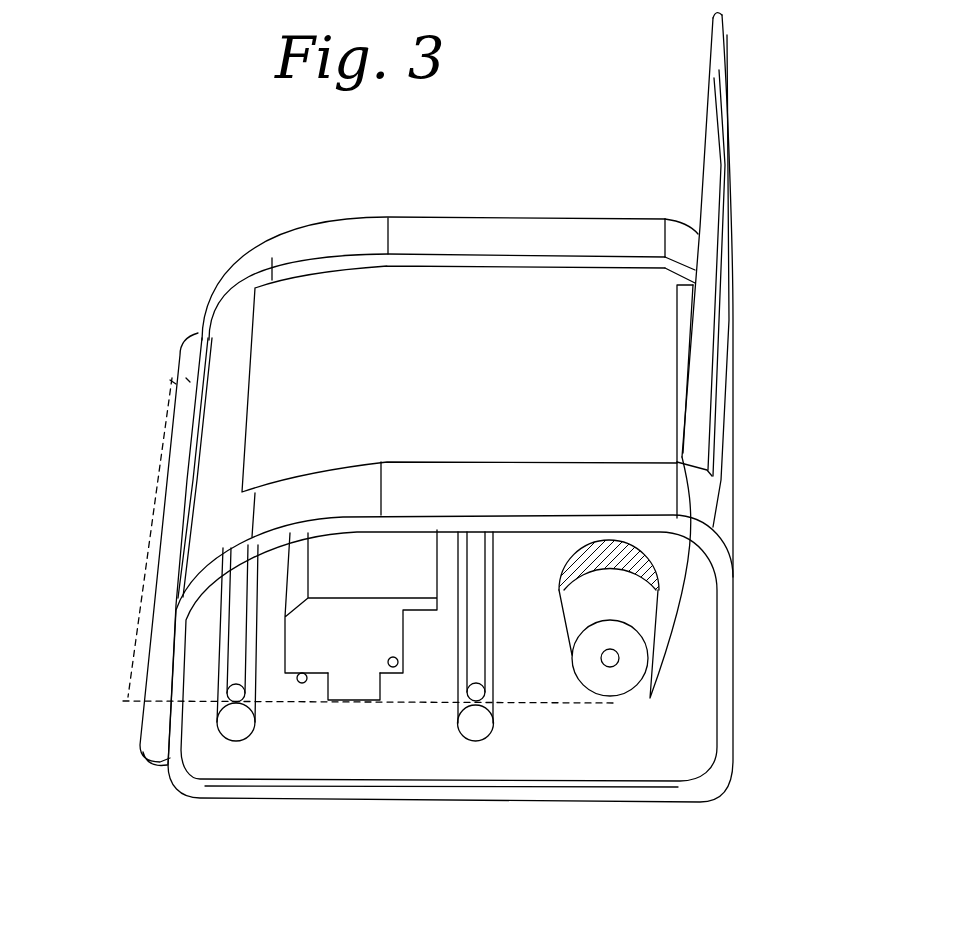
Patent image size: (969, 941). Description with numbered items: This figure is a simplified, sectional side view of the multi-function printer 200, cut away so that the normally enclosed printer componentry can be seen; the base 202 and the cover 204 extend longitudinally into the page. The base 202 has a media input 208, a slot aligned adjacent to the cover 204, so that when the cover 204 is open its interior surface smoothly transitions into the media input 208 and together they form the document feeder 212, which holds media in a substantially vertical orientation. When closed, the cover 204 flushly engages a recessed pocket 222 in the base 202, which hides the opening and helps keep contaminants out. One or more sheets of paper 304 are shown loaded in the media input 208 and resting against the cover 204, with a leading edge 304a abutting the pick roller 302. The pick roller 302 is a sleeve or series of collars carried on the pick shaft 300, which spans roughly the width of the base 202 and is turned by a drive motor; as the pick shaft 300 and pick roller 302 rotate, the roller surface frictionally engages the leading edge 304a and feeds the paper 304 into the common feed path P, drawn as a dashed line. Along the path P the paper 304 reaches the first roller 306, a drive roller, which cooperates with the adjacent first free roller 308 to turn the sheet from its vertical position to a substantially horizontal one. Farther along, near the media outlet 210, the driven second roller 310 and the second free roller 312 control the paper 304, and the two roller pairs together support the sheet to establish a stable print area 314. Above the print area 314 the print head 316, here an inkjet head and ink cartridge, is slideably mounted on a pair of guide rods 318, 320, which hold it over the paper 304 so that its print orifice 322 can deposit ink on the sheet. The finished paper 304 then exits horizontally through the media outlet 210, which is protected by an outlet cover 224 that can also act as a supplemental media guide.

The multi-function printer 200 is at (222, 115).
The base 202 is at (227, 270).
The cover 204 is at (710, 72).
The media input 208 is at (695, 435).
The media outlet 210 is at (157, 685).
The document feeder 212 is at (634, 155).
The pocket 222 is at (485, 305).
The outlet cover 224 is at (145, 760).
The pick shaft 300 is at (613, 700).
The pick roller 302 is at (568, 618).
The paper 304 is at (702, 312).
The leading edge 304a is at (670, 627).
The first roller 306 is at (477, 743).
The first free roller 308 is at (488, 690).
The second roller 310 is at (233, 740).
The second free roller 312 is at (233, 690).
The print area 314 is at (280, 717).
The print head 316 is at (347, 631).
The guide rod 318 is at (307, 673).
The guide rod 320 is at (402, 662).
The print orifice 322 is at (348, 700).
The common feed path P is at (418, 703).